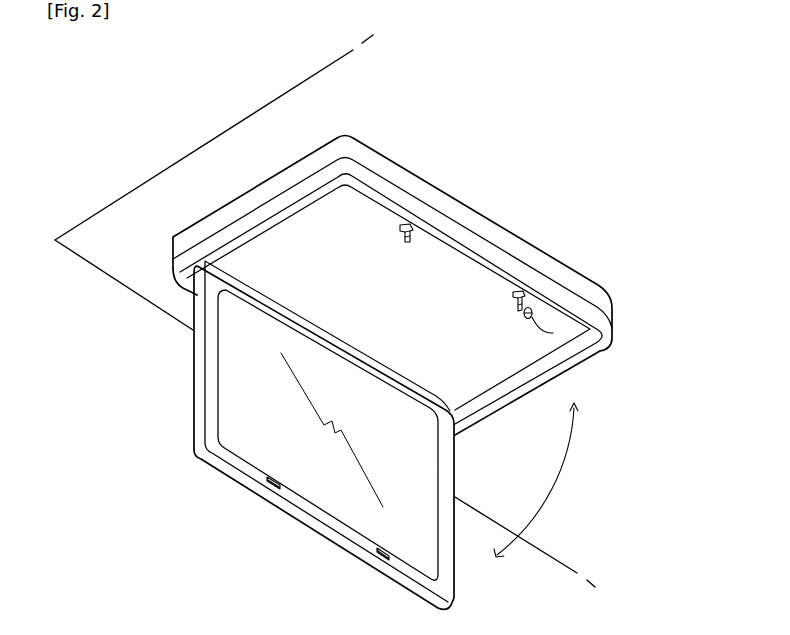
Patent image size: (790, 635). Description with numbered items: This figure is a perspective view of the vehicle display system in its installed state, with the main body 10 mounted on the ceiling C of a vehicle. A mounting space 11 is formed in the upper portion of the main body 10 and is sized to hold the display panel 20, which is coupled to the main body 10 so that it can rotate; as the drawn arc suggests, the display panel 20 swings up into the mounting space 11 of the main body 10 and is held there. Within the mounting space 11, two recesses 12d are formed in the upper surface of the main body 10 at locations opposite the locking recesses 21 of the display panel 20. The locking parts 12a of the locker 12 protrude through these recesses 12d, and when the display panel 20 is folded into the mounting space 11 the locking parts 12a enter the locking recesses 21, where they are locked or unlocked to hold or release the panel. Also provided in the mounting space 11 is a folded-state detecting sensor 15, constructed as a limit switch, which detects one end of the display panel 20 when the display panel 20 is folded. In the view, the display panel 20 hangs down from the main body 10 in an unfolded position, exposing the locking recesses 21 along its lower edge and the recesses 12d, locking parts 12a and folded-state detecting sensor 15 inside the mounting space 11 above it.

The ceiling C is at (202, 173).
The main body 10 is at (542, 246).
The mounting space 11 is at (528, 353).
The locker 12 is at (486, 238).
The locking parts 12a is at (519, 301).
The recesses 12d is at (405, 233).
The folded-state detecting sensor 15 is at (553, 333).
The display panel 20 is at (318, 539).
The locking recesses 21 is at (268, 487).